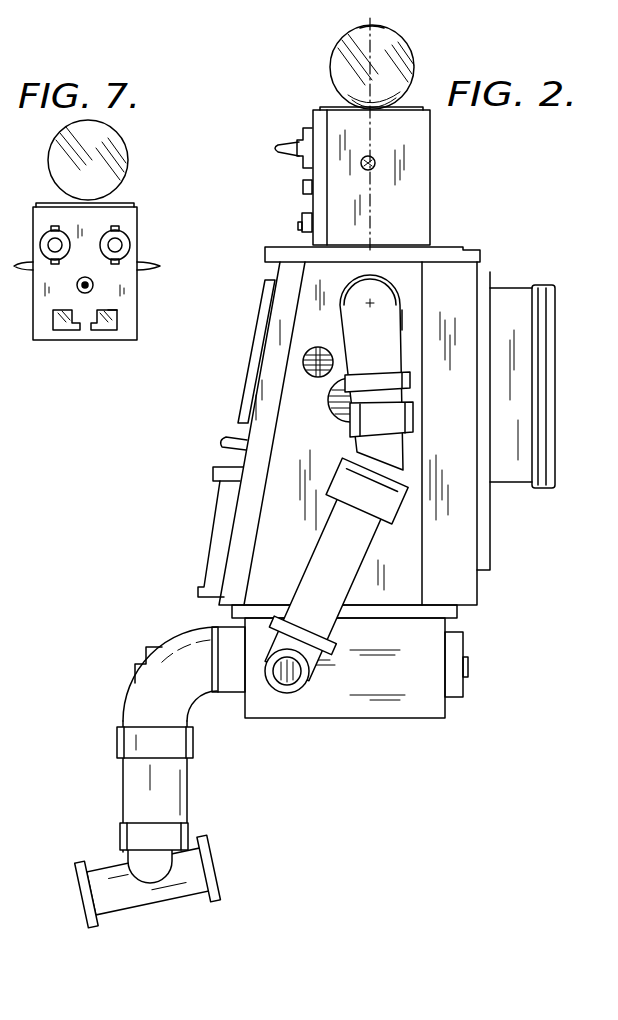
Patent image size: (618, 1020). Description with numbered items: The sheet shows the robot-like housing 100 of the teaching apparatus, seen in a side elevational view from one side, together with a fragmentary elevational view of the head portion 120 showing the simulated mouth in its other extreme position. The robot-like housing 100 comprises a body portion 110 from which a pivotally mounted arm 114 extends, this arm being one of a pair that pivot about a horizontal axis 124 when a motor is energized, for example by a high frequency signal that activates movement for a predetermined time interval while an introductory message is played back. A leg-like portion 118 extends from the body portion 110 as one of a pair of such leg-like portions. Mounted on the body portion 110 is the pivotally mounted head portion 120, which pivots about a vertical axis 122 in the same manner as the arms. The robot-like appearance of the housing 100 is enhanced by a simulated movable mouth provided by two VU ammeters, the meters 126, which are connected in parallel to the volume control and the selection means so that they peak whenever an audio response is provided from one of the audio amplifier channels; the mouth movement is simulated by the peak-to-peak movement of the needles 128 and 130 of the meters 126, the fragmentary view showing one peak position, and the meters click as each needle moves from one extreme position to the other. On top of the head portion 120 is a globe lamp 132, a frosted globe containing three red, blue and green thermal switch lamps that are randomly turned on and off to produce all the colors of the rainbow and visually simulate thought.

In FIG. 2, the robot-like housing 100 is at (382, 465).
In FIG. 2, the body portion 110 is at (477, 580).
In FIG. 2, the arm 114 is at (402, 323).
In FIG. 2, the leg-like portion 118 is at (186, 773).
In FIG. 7, the head portion 120 is at (137, 218).
In FIG. 2, the head portion 120 is at (430, 160).
In FIG. 2, the vertical axis 122 is at (374, 31).
In FIG. 2, the horizontal axis 124 is at (368, 304).
In FIG. 7, the meters 126 is at (112, 310).
In FIG. 2, the meters 126 is at (302, 218).
In FIG. 7, the needle 128 is at (108, 323).
In FIG. 7, the needle 130 is at (58, 321).
In FIG. 7, the globe lamp 132 is at (128, 162).
In FIG. 2, the globe lamp 132 is at (414, 52).